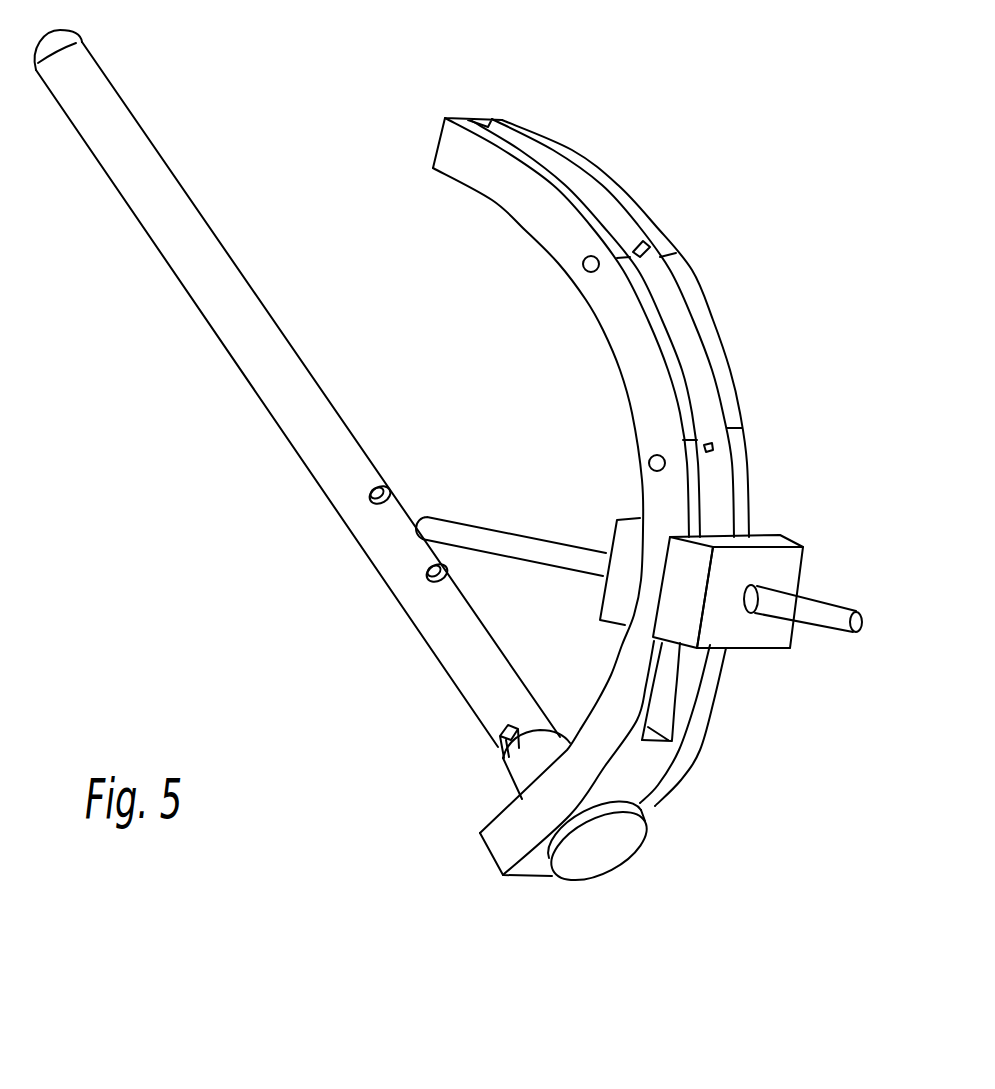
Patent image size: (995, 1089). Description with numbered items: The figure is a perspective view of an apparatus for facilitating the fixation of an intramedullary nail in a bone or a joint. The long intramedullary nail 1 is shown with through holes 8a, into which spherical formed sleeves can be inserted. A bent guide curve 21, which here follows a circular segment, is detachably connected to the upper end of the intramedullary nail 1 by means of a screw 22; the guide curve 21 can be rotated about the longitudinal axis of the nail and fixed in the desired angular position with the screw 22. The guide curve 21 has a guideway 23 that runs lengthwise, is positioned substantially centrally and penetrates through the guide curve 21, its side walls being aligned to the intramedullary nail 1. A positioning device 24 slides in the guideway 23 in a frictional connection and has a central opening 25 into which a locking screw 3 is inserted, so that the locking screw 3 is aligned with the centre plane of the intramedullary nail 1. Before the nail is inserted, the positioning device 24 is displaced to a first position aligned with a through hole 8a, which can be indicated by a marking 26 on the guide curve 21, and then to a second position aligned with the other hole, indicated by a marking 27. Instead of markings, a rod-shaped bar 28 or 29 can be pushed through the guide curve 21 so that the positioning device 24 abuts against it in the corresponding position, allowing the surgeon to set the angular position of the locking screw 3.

The intramedullary nail 1 is at (220, 263).
The locking screw 3 is at (828, 630).
The through hole 8a is at (383, 481).
The guide curve 21 is at (562, 142).
The screw 22 is at (600, 857).
The guideway 23 is at (692, 353).
The positioning device 24 is at (780, 570).
The central opening 25 is at (752, 578).
The marking 26 is at (733, 423).
The marking 27 is at (673, 251).
The rod-shaped bar 28 is at (712, 447).
The rod-shaped bar 29 is at (636, 246).